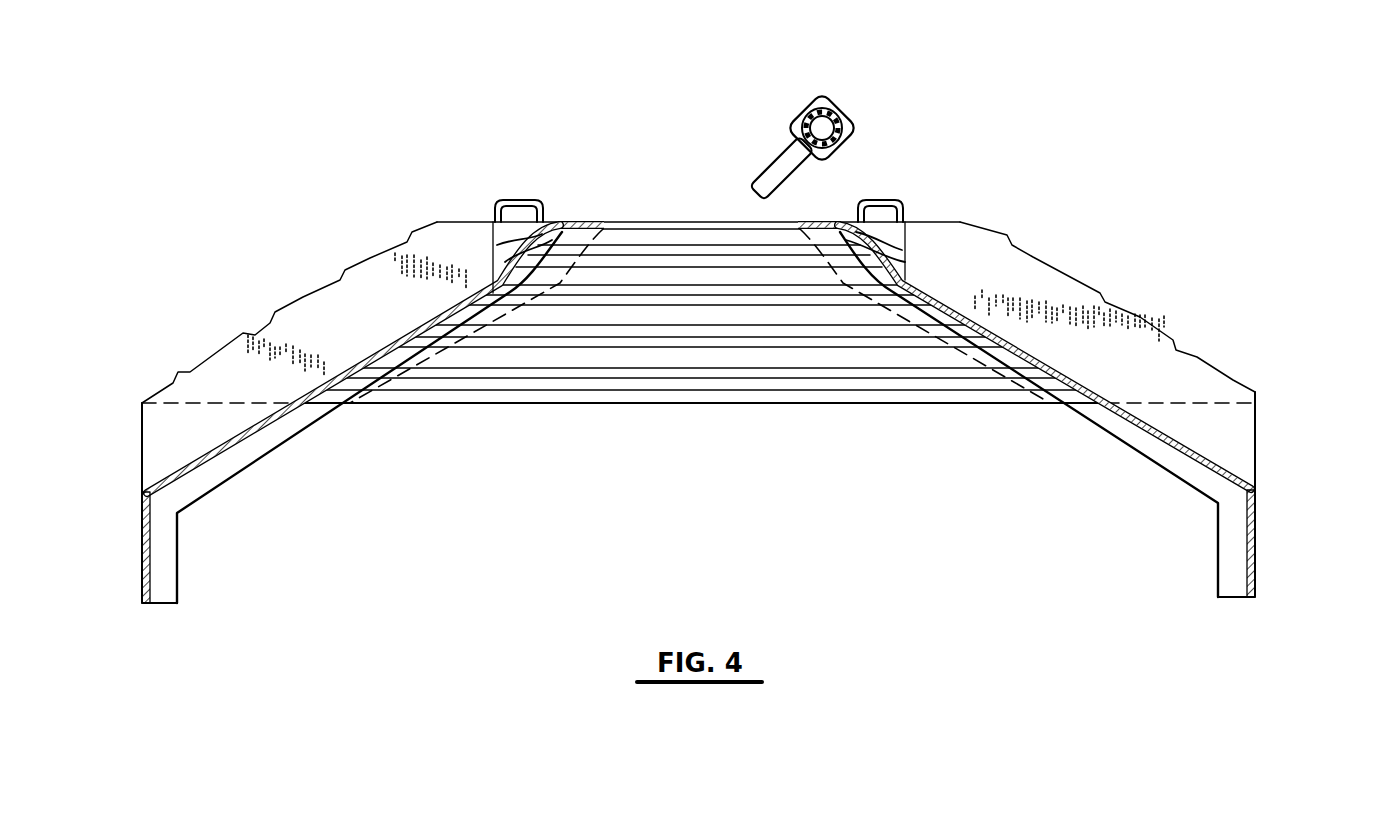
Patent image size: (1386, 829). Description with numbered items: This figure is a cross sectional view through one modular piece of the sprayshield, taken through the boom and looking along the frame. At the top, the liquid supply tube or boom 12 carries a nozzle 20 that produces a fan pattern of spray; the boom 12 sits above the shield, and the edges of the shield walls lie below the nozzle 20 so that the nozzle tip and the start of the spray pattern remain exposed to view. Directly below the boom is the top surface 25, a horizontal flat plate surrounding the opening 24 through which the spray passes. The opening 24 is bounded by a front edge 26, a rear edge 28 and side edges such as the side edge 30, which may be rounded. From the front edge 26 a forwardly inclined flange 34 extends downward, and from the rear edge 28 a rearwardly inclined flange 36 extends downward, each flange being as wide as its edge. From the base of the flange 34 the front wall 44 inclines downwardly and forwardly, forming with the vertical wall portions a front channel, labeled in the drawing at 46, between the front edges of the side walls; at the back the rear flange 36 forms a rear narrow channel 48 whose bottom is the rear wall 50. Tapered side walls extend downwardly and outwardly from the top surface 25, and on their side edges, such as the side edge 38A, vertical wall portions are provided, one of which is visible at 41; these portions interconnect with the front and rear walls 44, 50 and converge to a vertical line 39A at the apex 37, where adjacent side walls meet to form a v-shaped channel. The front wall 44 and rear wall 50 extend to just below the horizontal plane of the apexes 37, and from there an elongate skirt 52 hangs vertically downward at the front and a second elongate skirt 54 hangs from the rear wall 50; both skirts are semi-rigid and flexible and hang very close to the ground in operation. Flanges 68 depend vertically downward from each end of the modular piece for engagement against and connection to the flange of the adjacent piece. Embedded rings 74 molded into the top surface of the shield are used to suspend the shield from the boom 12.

The liquid supply tube or boom 12 is at (841, 109).
The nozzle 20 is at (812, 131).
The opening 24 is at (661, 216).
The top surface 25 is at (475, 218).
The front edge 26 is at (605, 226).
The rear edge 28 is at (798, 222).
The side edge 30 is at (687, 222).
The forwardly inclined flange 34 is at (494, 261).
The rearwardly inclined flange 36 is at (907, 258).
The apex 37 is at (142, 400).
The side edge of wall 38A is at (345, 295).
The vertical line 39A is at (142, 432).
The vertical wall portion 41 is at (1018, 272).
The front wall 44 is at (381, 344).
The left top flange 46 is at (491, 230).
The rear narrow channel 48 is at (904, 232).
The rear wall 50 is at (1108, 390).
The elongate skirt 52 is at (140, 540).
The elongate skirt 54 is at (1257, 552).
The flange 68 is at (270, 442).
The embedded ring 74 is at (500, 199).